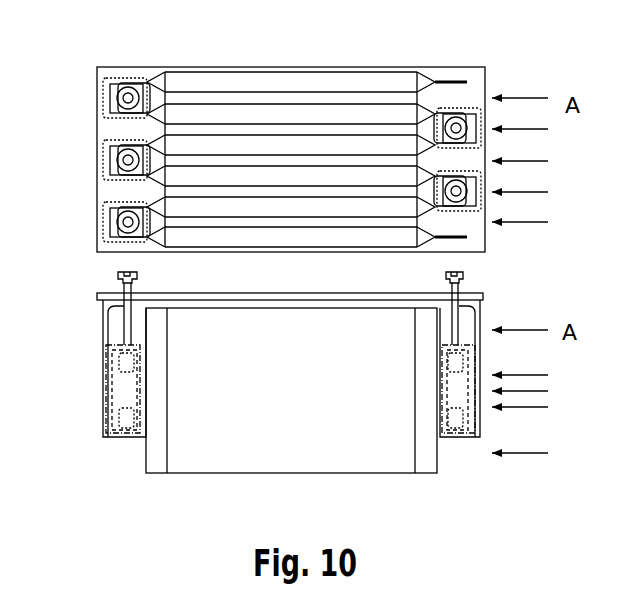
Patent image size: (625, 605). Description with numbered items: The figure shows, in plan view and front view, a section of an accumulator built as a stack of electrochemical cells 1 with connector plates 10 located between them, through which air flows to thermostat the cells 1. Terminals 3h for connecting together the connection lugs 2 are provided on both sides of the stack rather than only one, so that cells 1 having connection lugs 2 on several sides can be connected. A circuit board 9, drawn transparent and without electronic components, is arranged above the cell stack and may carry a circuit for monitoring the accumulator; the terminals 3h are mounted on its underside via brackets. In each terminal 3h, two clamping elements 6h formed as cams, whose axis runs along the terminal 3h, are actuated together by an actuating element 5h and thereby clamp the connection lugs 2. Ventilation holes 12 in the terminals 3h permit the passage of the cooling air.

The electrochemical cell 1 is at (378, 82).
The connection lug 2 is at (146, 82).
The terminal 3h is at (98, 117).
The actuating element 5h is at (117, 278).
The clamping element 6h is at (102, 87).
The circuit board 9 is at (485, 73).
The connector plate 10 is at (432, 88).
The ventilation hole 12 is at (97, 220).